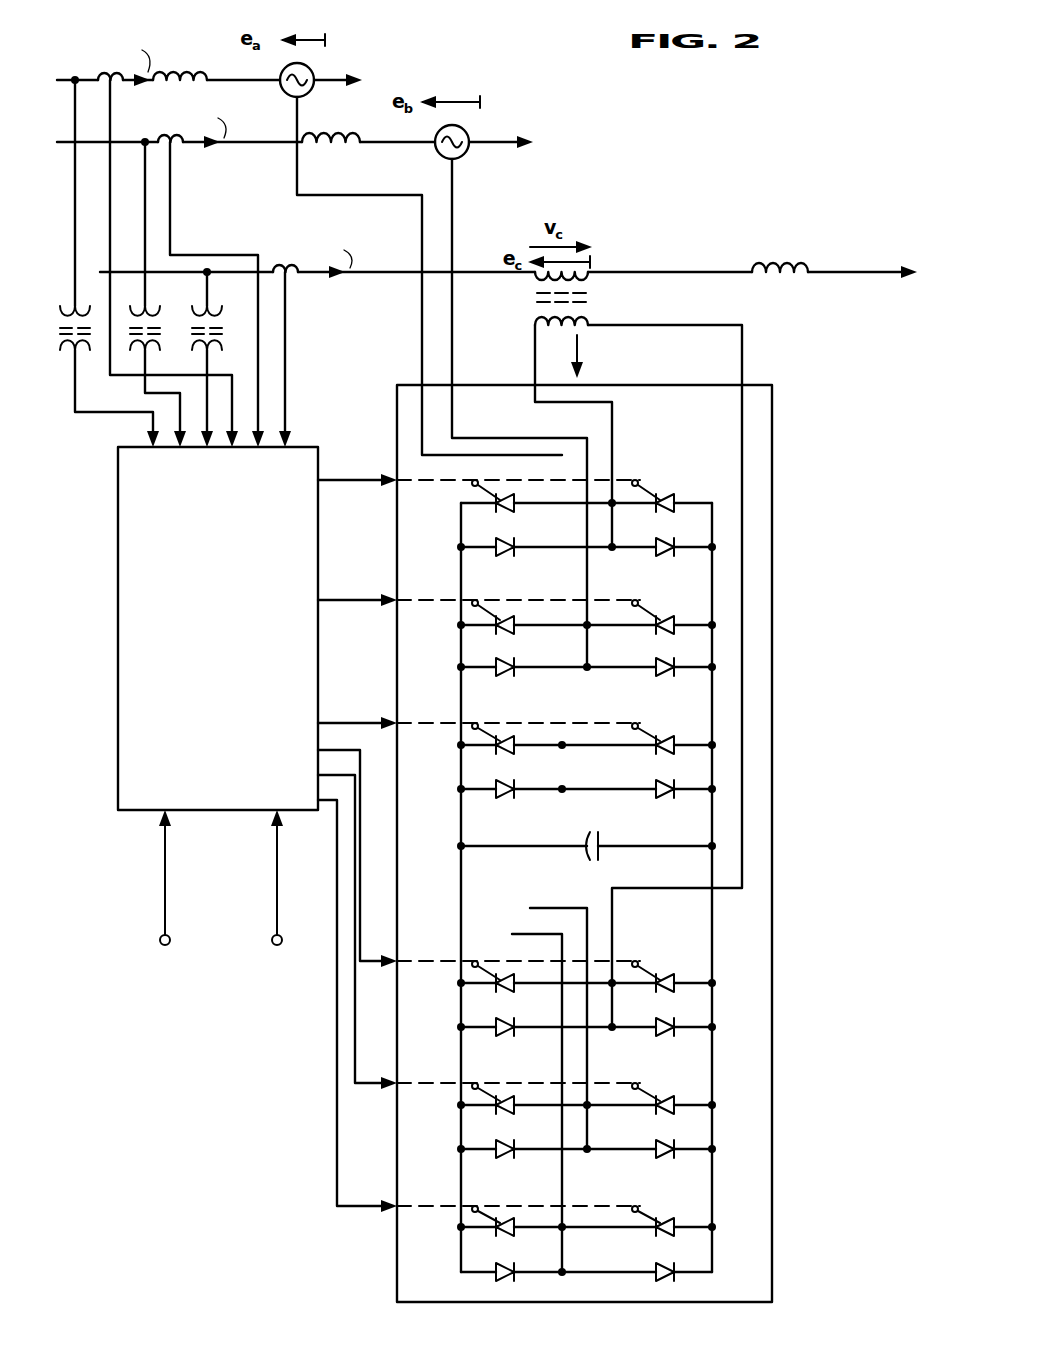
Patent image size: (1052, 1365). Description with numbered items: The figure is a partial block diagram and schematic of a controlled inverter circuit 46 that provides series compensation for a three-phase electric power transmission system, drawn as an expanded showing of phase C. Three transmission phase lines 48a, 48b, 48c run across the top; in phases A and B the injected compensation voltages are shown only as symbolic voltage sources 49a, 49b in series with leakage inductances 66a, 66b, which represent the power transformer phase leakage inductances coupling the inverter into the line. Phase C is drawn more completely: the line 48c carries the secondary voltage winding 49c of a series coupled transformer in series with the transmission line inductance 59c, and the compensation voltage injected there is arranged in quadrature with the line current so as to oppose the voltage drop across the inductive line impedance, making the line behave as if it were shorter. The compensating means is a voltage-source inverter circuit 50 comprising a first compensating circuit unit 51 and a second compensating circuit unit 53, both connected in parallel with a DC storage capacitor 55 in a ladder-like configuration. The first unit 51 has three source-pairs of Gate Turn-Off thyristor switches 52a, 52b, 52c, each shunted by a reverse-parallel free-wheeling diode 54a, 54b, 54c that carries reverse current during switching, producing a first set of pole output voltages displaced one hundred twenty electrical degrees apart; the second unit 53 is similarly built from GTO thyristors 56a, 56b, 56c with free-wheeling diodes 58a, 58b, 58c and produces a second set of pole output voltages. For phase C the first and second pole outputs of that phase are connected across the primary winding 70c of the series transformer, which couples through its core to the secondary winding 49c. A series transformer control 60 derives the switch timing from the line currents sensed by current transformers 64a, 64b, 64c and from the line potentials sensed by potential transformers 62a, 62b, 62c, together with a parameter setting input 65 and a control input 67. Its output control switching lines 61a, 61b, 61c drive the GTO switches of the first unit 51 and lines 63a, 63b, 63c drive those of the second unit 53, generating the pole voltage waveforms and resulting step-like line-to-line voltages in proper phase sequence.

The controlled inverter circuit 46 is at (734, 221).
The phase A transmission line 48a is at (340, 76).
The phase B transmission line 48b is at (508, 138).
The phase C transmission line 48c is at (655, 271).
The symbolic voltage source for phase A 49a is at (279, 78).
The symbolic voltage source for phase B 49b is at (511, 396).
The secondary voltage winding 49c is at (590, 300).
The voltage-source inverter circuit 50 is at (775, 486).
The first compensating circuit unit 51 is at (666, 429).
The GTO thyristor switch of phase A, first unit 52a is at (512, 752).
The GTO thyristor switch of phase B, first unit 52b is at (512, 632).
The GTO thyristor switch of phase C, first unit 52c is at (512, 510).
The second compensating circuit unit 53 is at (661, 924).
The free-wheeling diode of phase A, first unit 54a is at (502, 798).
The free-wheeling diode of phase B, first unit 54b is at (510, 676).
The free-wheeling diode of phase C, first unit 54c is at (510, 556).
The DC storage capacitor 55 is at (603, 846).
The GTO thyristor switch of phase A, second unit 56a is at (512, 1234).
The GTO thyristor switch of phase B, second unit 56b is at (512, 1112).
The GTO thyristor switch of phase C, second unit 56c is at (512, 990).
The free-wheeling diode of phase A, second unit 58a is at (500, 1278).
The free-wheeling diode of phase B, second unit 58b is at (510, 1158).
The free-wheeling diode of phase C, second unit 58c is at (510, 1036).
The transmission line inductance 59c is at (810, 275).
The series transformer control 60 is at (313, 446).
The output control switching line for phase A, first unit 61a is at (358, 721).
The output control switching line for phase B, first unit 61b is at (358, 598).
The output control switching line for phase C, first unit 61c is at (358, 478).
The potential transformer for phase A 62a is at (85, 352).
The potential transformer for phase B 62b is at (167, 322).
The potential transformer for phase C 62c is at (202, 346).
The output control switching line for phase A, second unit 63a is at (337, 1174).
The output control switching line for phase B, second unit 63b is at (357, 1050).
The output control switching line for phase C, second unit 63c is at (363, 752).
The current transformer for phase A 64a is at (103, 76).
The current transformer for phase B 64b is at (175, 148).
The current transformer for phase C 64c is at (288, 282).
The parameter setting input 65 is at (163, 911).
The phase A leakage inductance 66a is at (178, 72).
The phase B leakage inductance 66b is at (342, 150).
The control input 67 is at (276, 911).
The series coupled transformer primary winding 70c is at (532, 278).